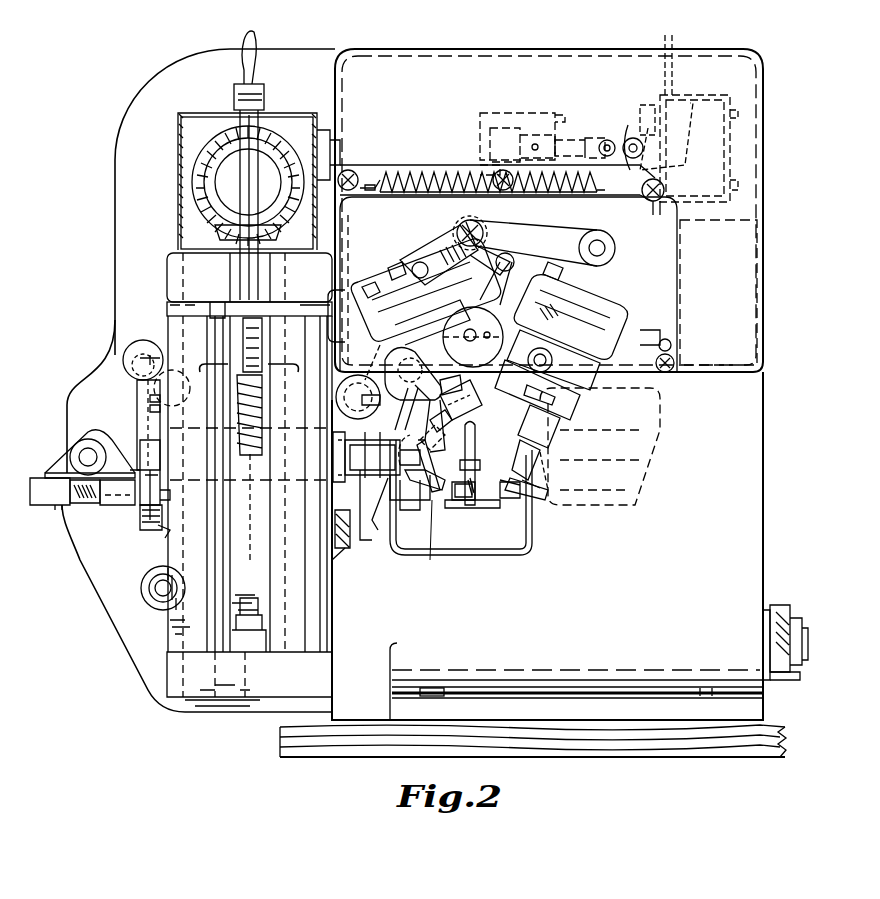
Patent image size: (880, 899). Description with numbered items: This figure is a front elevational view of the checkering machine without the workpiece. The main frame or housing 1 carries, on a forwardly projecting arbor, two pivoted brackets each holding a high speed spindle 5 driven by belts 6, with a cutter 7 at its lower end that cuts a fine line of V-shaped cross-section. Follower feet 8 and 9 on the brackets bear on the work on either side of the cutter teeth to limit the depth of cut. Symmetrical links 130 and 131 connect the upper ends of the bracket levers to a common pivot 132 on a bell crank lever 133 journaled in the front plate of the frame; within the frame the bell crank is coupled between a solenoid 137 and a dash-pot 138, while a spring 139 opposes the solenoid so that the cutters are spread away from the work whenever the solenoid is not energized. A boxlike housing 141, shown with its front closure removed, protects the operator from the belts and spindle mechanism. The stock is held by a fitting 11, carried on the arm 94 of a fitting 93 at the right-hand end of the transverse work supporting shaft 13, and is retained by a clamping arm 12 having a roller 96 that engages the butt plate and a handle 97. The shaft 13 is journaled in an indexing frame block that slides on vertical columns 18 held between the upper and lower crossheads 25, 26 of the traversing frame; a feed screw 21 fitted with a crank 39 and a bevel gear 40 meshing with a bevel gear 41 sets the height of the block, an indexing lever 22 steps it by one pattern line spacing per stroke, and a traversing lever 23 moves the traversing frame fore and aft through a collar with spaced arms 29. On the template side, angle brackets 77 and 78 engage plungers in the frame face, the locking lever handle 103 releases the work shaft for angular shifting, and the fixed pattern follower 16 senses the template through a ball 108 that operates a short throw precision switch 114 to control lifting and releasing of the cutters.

The main frame 1 is at (758, 415).
The spindle 5 is at (378, 279).
The belts 6 is at (429, 314).
The cutter 7 is at (455, 500).
The follower foot 8 is at (428, 492).
The follower foot 9 is at (536, 500).
The fitting 11 is at (470, 505).
The clamping arm 12 is at (445, 439).
The work supporting shaft 13 is at (370, 485).
The pattern follower 16 is at (78, 455).
The columns 18 is at (195, 638).
The feed screw 21 is at (240, 177).
The indexing lever 22 is at (345, 560).
The traversing lever 23 is at (783, 605).
The upper crosshead 25 is at (200, 276).
The lower crosshead 26 is at (185, 675).
The spaced arms 29 is at (577, 375).
The crank 39 is at (253, 45).
The bevel gear 40 is at (180, 238).
The bevel gear 41 is at (180, 180).
The angle bracket 77 is at (140, 412).
The angle bracket 78 is at (160, 535).
The fitting 93 is at (355, 445).
The arm 94 is at (374, 513).
The roller 96 is at (473, 337).
The handle 97 is at (399, 400).
The handle 103 is at (140, 352).
The ball 108 is at (143, 450).
The precision switch 114 is at (40, 472).
The link 130 is at (450, 239).
The link 131 is at (488, 275).
The common pivot 132 is at (478, 226).
The bell crank lever 133 is at (567, 215).
The solenoid 137 is at (650, 105).
The dash-pot 138 is at (510, 112).
The spring 139 is at (435, 178).
The boxlike housing 141 is at (392, 178).